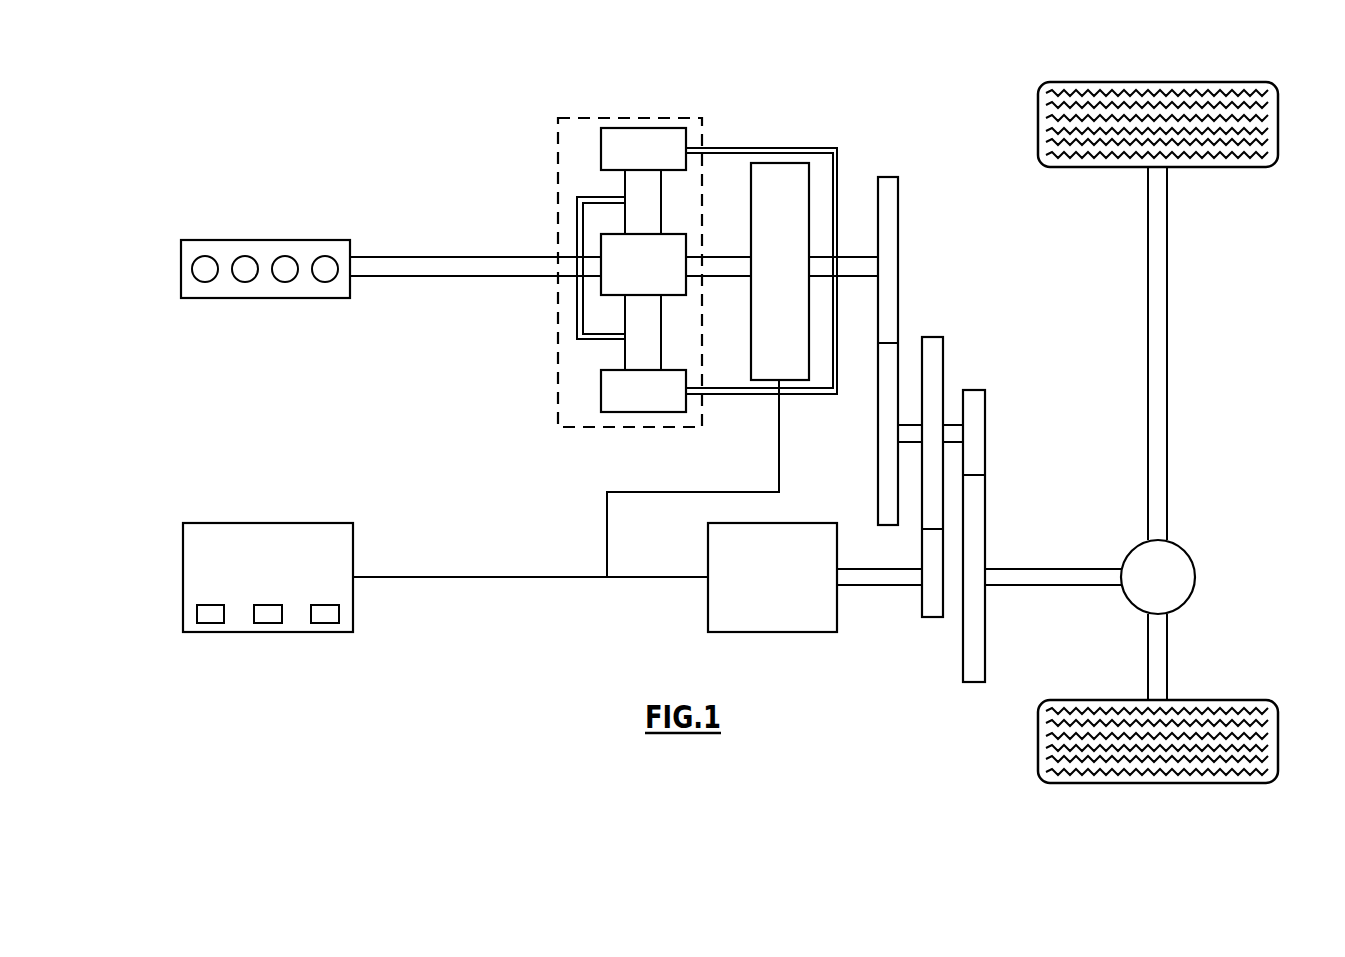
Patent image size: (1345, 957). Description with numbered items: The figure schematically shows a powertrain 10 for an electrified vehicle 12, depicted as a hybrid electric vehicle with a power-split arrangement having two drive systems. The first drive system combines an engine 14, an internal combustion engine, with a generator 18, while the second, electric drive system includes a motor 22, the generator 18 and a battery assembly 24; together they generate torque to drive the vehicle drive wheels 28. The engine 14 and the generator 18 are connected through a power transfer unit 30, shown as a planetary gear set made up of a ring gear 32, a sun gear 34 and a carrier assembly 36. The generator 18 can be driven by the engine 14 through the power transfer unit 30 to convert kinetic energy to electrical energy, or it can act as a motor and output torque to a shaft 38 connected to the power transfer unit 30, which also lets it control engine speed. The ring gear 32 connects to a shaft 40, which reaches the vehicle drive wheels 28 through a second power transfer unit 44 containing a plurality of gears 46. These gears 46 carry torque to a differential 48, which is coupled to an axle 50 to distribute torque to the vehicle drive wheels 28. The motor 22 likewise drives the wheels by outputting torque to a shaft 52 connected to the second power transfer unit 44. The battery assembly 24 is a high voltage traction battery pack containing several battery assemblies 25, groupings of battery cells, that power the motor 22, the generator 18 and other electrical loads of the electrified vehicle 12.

The powertrain 10 is at (405, 145).
The electrified vehicle 12 is at (804, 74).
The engine 14 is at (198, 240).
The generator 18 is at (779, 163).
The motor 22 is at (837, 615).
The battery assembly 24 is at (201, 523).
The battery assemblies 25 is at (224, 614).
The vehicle drive wheels 28 is at (1278, 740).
The power transfer unit 30 is at (558, 385).
The ring gear 32 is at (601, 148).
The sun gear 34 is at (601, 240).
The carrier assembly 36 is at (577, 325).
The shaft 38 is at (720, 257).
The shaft 40 is at (858, 256).
The second power transfer unit 44 is at (972, 296).
The gears 46 is at (985, 432).
The differential 48 is at (1188, 598).
The axle 50 is at (1167, 343).
The shaft 52 is at (890, 586).